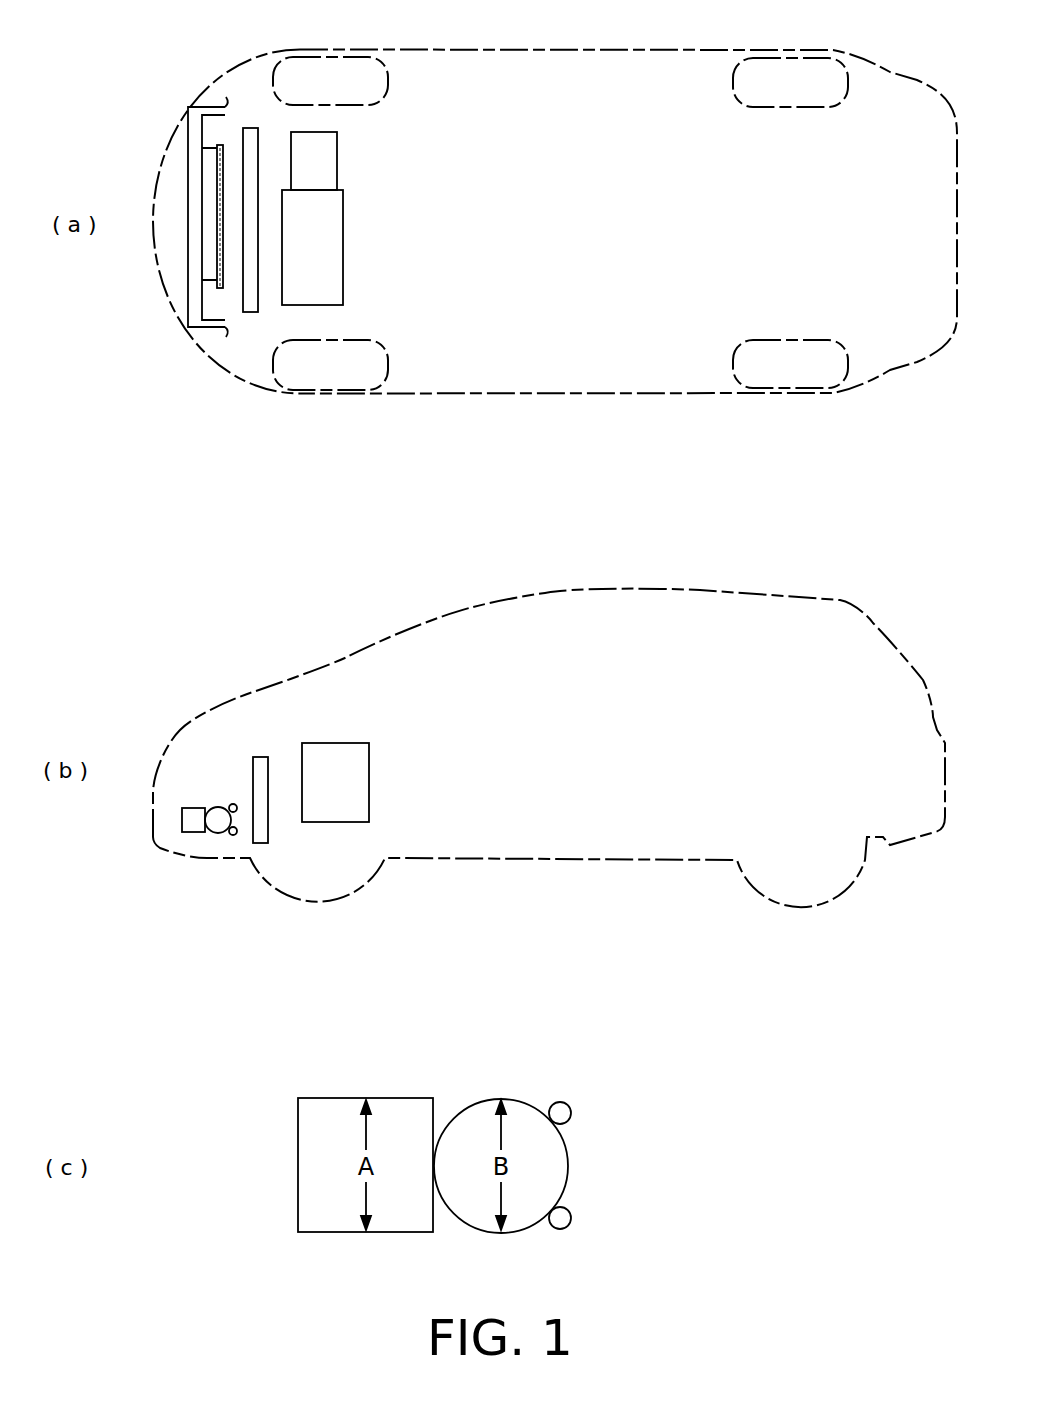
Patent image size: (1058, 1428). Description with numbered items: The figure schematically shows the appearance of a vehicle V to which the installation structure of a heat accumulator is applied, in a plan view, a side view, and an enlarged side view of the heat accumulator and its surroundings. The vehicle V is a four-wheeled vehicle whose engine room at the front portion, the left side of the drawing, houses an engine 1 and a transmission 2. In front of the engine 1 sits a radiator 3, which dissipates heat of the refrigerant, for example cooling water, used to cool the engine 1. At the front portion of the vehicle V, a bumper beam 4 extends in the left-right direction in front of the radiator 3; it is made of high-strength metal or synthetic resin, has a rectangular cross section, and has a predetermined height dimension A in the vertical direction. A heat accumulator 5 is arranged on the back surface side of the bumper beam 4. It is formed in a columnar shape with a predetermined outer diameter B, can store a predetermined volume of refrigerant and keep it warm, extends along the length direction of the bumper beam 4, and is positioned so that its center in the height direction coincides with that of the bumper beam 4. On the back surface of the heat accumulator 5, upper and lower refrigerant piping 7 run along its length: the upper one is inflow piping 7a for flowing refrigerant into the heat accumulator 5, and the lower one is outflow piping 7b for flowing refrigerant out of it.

The vehicle V is at (517, 50).
The engine 1 is at (343, 255).
The transmission 2 is at (337, 160).
The radiator 3 is at (258, 170).
The bumper beam 4 is at (188, 137).
The heat accumulator 5 is at (200, 260).
The refrigerant piping 7 is at (225, 272).
The inflow piping 7a is at (571, 1110).
The outflow piping 7b is at (571, 1218).